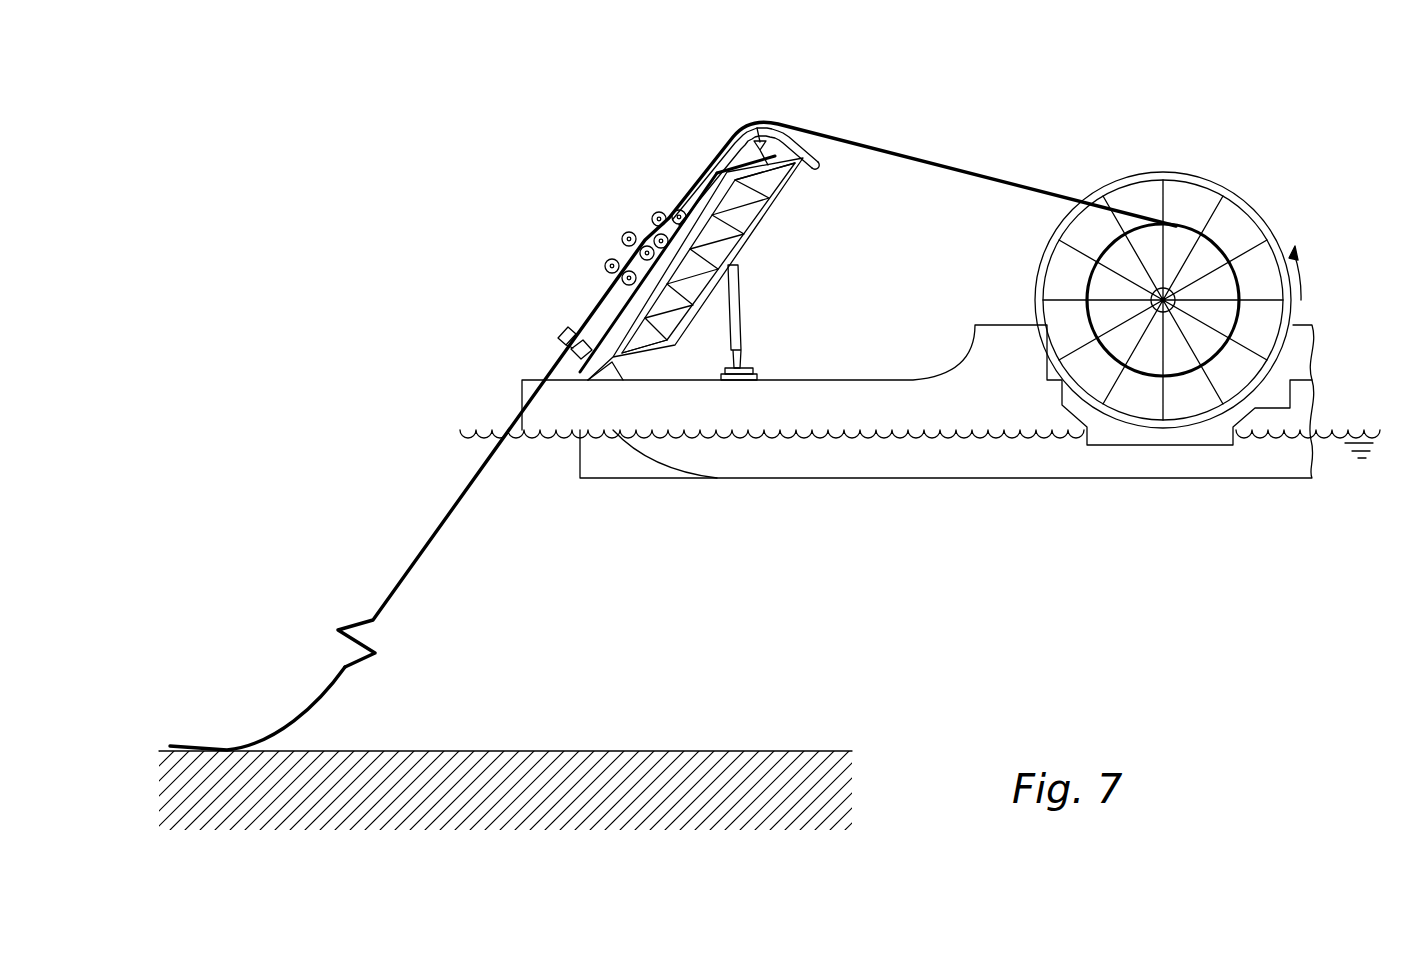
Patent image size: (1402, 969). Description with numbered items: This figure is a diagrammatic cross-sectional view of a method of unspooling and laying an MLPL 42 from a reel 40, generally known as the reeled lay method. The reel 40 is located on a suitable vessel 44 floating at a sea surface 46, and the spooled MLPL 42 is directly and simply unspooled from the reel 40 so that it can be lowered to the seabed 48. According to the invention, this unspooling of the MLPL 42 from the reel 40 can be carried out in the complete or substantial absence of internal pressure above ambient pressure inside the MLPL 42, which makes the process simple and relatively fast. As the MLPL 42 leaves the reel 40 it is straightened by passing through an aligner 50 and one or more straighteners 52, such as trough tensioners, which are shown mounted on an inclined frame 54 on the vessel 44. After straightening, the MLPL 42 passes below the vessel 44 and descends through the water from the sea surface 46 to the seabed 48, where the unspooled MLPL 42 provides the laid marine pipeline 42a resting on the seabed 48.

The reel 40 is at (1208, 175).
The MLPL 42 is at (937, 162).
The laid marine pipeline 42a is at (228, 748).
The vessel 44 is at (863, 379).
The sea surface 46 is at (450, 434).
The seabed 48 is at (540, 810).
The aligner 50 is at (748, 128).
The straighteners 52 is at (656, 211).
The ramp frame 54 is at (757, 222).